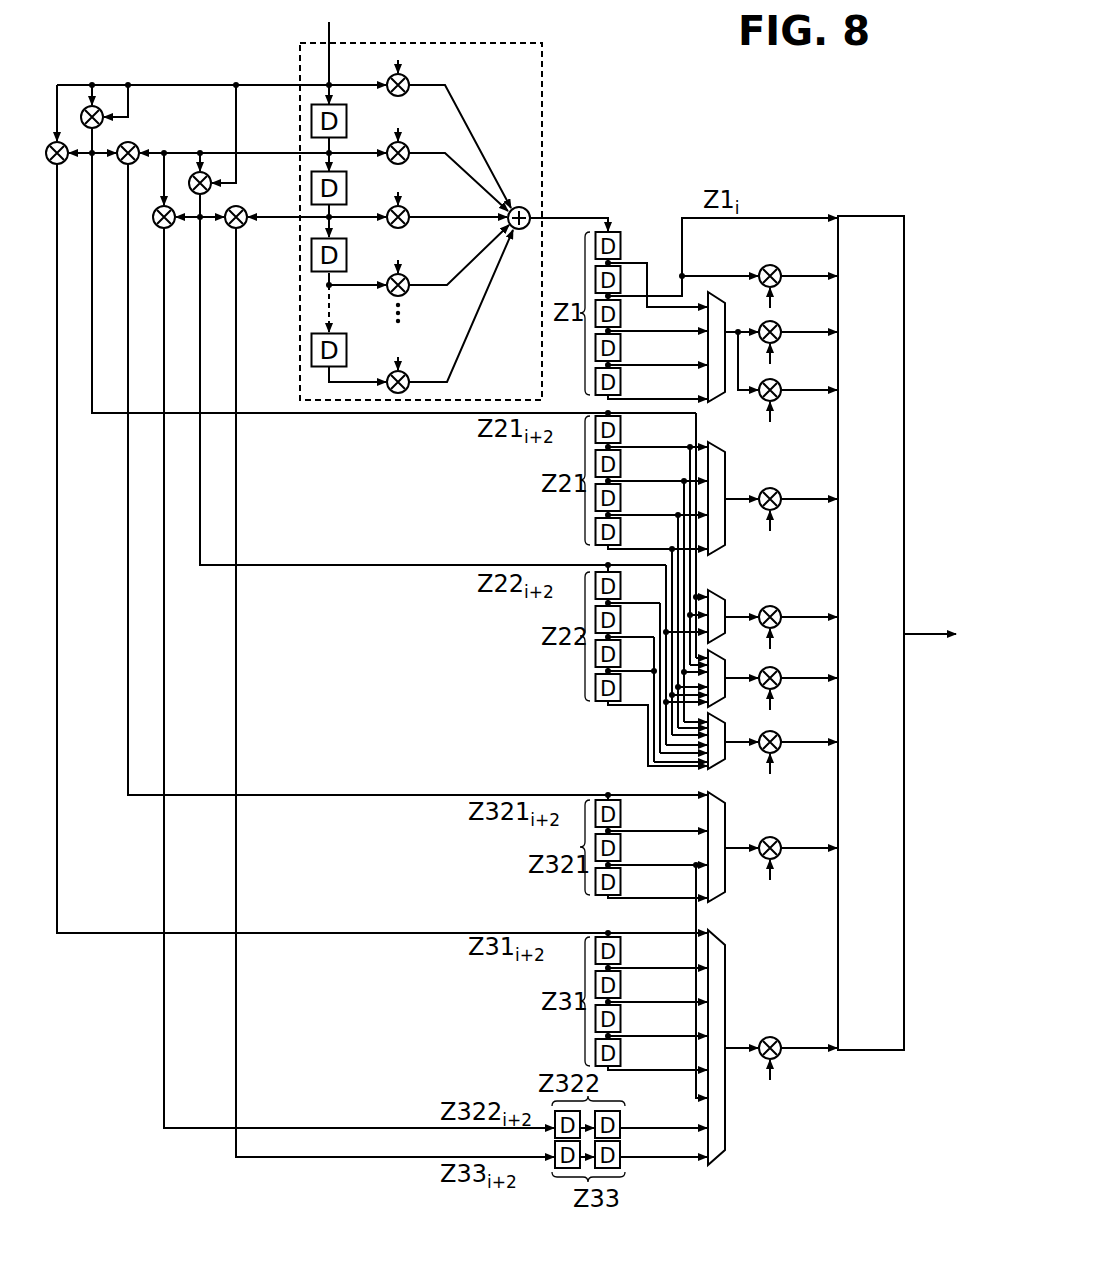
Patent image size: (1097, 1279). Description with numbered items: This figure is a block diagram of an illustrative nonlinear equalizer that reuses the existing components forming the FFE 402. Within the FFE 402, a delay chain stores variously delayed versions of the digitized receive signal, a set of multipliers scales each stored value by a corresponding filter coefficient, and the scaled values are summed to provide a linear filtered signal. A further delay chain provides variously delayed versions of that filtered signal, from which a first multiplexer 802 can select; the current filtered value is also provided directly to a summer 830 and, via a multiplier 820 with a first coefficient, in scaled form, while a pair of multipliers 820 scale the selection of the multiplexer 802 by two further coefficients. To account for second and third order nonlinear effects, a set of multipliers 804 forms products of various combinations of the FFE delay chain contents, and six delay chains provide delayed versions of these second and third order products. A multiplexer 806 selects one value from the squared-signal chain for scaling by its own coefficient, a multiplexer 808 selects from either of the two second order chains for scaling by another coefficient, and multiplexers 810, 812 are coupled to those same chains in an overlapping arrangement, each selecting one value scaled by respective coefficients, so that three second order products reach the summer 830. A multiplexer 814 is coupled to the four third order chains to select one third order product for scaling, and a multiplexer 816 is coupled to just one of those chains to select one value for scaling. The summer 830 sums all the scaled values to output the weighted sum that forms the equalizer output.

The FFE 402 is at (500, 44).
The first multiplexer 802 is at (713, 404).
The set of multipliers 804 is at (245, 68).
The multiplexer 806 is at (727, 485).
The multiplexer 808 is at (713, 655).
The multiplexer 810 is at (711, 593).
The multiplexer 812 is at (723, 769).
The multiplexer 814 is at (727, 1136).
The multiplexer 816 is at (727, 900).
The multiplier 820 is at (827, 171).
The summer 830 is at (890, 1052).